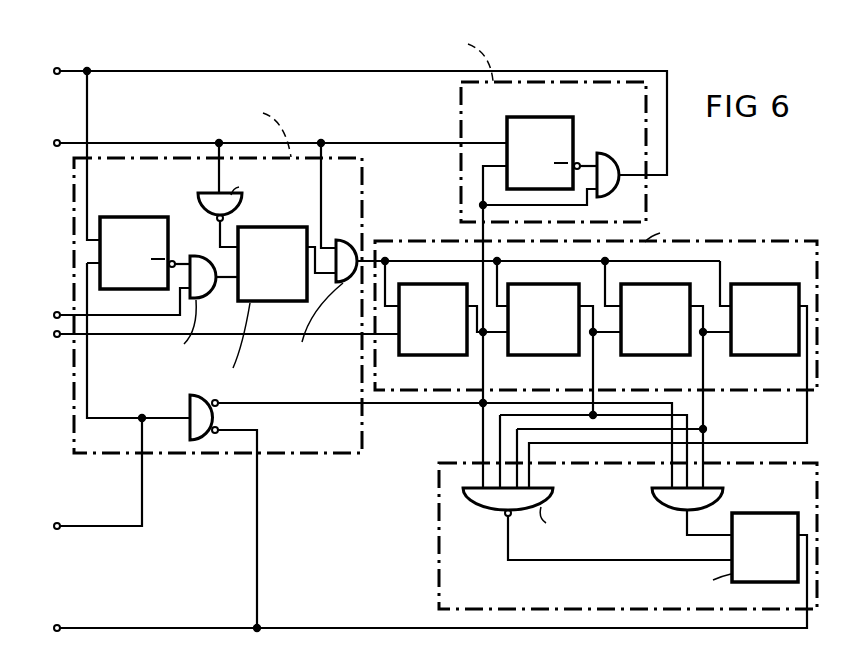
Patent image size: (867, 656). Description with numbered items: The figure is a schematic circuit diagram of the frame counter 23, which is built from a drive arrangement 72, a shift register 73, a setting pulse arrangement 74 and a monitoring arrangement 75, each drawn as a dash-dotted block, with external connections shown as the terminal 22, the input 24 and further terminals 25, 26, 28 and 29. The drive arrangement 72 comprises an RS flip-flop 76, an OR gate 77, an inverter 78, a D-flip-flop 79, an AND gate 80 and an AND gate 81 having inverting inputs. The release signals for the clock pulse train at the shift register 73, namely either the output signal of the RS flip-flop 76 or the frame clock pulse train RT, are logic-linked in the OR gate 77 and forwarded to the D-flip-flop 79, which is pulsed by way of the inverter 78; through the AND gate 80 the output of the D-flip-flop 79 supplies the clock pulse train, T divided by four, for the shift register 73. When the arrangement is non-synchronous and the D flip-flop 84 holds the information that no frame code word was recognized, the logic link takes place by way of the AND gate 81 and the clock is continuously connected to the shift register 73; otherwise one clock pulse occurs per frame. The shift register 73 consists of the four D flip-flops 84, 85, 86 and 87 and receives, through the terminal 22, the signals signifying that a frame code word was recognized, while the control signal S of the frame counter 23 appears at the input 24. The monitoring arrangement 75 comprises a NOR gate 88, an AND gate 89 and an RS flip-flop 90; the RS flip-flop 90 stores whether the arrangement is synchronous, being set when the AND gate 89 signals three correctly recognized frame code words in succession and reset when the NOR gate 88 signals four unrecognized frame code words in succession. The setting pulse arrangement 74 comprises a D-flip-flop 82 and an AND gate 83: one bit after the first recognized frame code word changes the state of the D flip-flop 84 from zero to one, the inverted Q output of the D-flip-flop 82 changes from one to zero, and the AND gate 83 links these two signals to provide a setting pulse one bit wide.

The terminal 22 is at (213, 342).
The frame counter 23 is at (364, 543).
The input 24 is at (85, 479).
The output terminal SA 25 is at (417, 589).
The input terminal SI 26 is at (347, 141).
The input terminal T/4 28 is at (267, 182).
The input terminal RT 29 is at (109, 307).
The drive arrangement 72 is at (361, 198).
The shift register 73 is at (775, 240).
The setting pulse arrangement 74 is at (460, 98).
The monitoring arrangement 75 is at (455, 463).
The RS flip-flop 76 is at (138, 306).
The OR gate 77 is at (166, 295).
The inverter 78 is at (242, 208).
The D-flip-flop 79 is at (291, 298).
The AND gate 80 is at (482, 287).
The AND gate having inverting inputs 81 is at (429, 499).
The D-flip-flop 82 is at (539, 290).
The AND gate 83 is at (610, 162).
The D flip-flop 84 is at (453, 333).
The D flip-flop 85 is at (564, 349).
The D flip-flop 86 is at (676, 386).
The D flip-flop 87 is at (668, 386).
The NOR gate 88 is at (597, 520).
The AND gate 89 is at (676, 507).
The RS flip-flop 90 is at (691, 538).